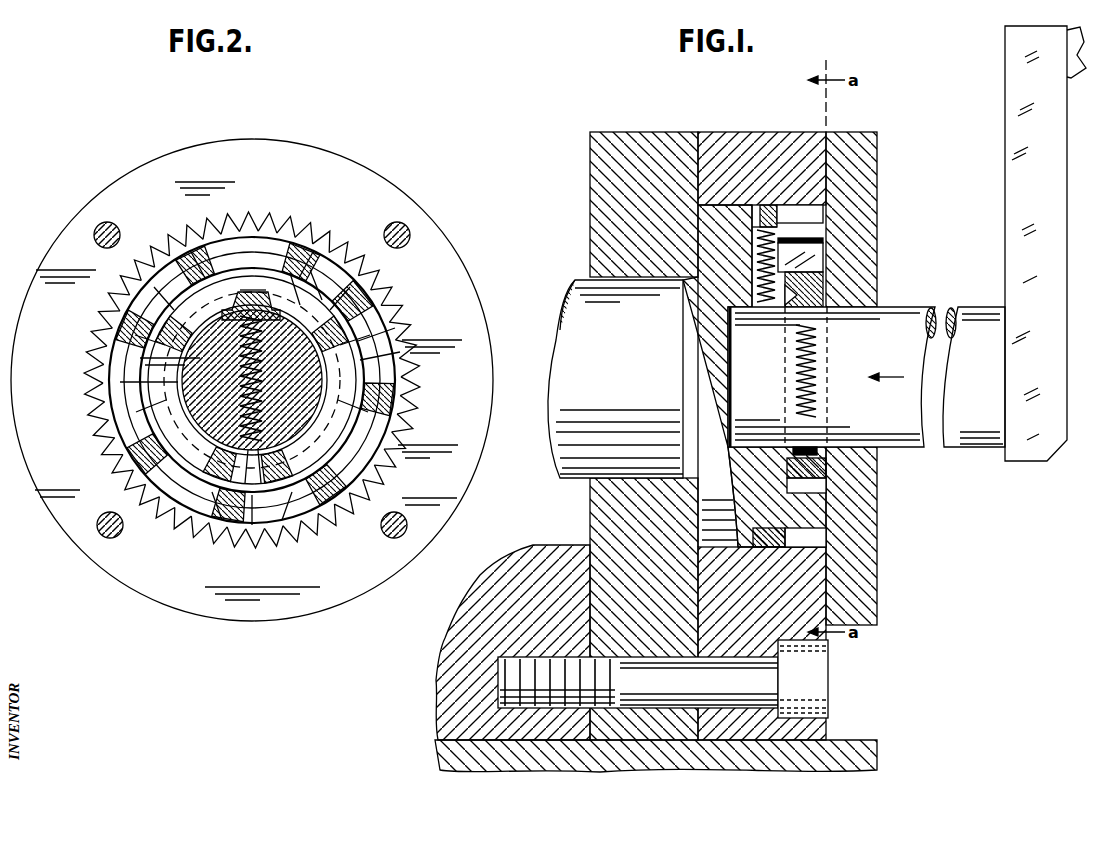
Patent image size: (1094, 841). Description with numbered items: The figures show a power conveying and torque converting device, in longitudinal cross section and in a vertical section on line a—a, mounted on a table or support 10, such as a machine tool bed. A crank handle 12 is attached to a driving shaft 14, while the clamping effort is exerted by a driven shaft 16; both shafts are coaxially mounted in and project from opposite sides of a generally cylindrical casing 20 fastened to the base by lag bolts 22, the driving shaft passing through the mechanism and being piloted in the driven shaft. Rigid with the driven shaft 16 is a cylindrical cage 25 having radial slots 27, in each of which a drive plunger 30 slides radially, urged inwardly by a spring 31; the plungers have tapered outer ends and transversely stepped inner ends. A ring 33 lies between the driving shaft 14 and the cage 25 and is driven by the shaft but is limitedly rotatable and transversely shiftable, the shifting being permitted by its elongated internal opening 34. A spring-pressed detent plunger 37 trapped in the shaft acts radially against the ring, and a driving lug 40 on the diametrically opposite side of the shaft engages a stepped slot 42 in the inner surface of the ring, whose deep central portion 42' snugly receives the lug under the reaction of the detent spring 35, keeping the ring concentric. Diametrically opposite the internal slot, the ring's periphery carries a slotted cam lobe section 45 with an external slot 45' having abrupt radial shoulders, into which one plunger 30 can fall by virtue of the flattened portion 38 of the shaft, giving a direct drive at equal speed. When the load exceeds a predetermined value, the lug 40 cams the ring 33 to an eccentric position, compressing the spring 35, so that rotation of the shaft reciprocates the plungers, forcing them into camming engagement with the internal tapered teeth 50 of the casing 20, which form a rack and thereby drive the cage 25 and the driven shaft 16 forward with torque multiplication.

In FIG. 1, the table or support 10 is at (866, 740).
In FIG. 1, the crank handle 12 is at (1005, 73).
In FIG. 2, the driving shaft 14 is at (128, 373).
In FIG. 1, the driving shaft 14 is at (921, 307).
In FIG. 1, the driven shaft 16 is at (586, 284).
In FIG. 2, the casing 20 is at (435, 238).
In FIG. 1, the casing 20 is at (770, 148).
In FIG. 1, the lag bolts 22 is at (820, 673).
In FIG. 2, the cage 25 is at (212, 250).
In FIG. 1, the cage 25 is at (815, 511).
In FIG. 2, the radial slots 27 is at (262, 290).
In FIG. 2, the drive plunger 30 is at (300, 300).
In FIG. 1, the drive plunger 30 is at (805, 255).
In FIG. 1, the spring 31 is at (770, 232).
In FIG. 2, the ring 33 is at (395, 312).
In FIG. 1, the ring 33 is at (826, 470).
In FIG. 2, the internal opening 34 is at (210, 513).
In FIG. 2, the detent spring 35 is at (428, 342).
In FIG. 1, the detent spring 35 is at (832, 343).
In FIG. 2, the detent plunger 37 is at (256, 485).
In FIG. 2, the flattened portion of shaft 38 is at (400, 445).
In FIG. 2, the driving lug 40 is at (300, 270).
In FIG. 1, the driving lug 40 is at (820, 294).
In FIG. 2, the stepped slot 42 is at (252, 342).
In FIG. 2, the central portion of slot 42' is at (256, 237).
In FIG. 2, the cam lobe section 45 is at (344, 552).
In FIG. 2, the external slot 45' is at (293, 555).
In FIG. 2, the internal tapered teeth 50 is at (397, 327).
In FIG. 1, the internal tapered teeth 50 is at (815, 215).